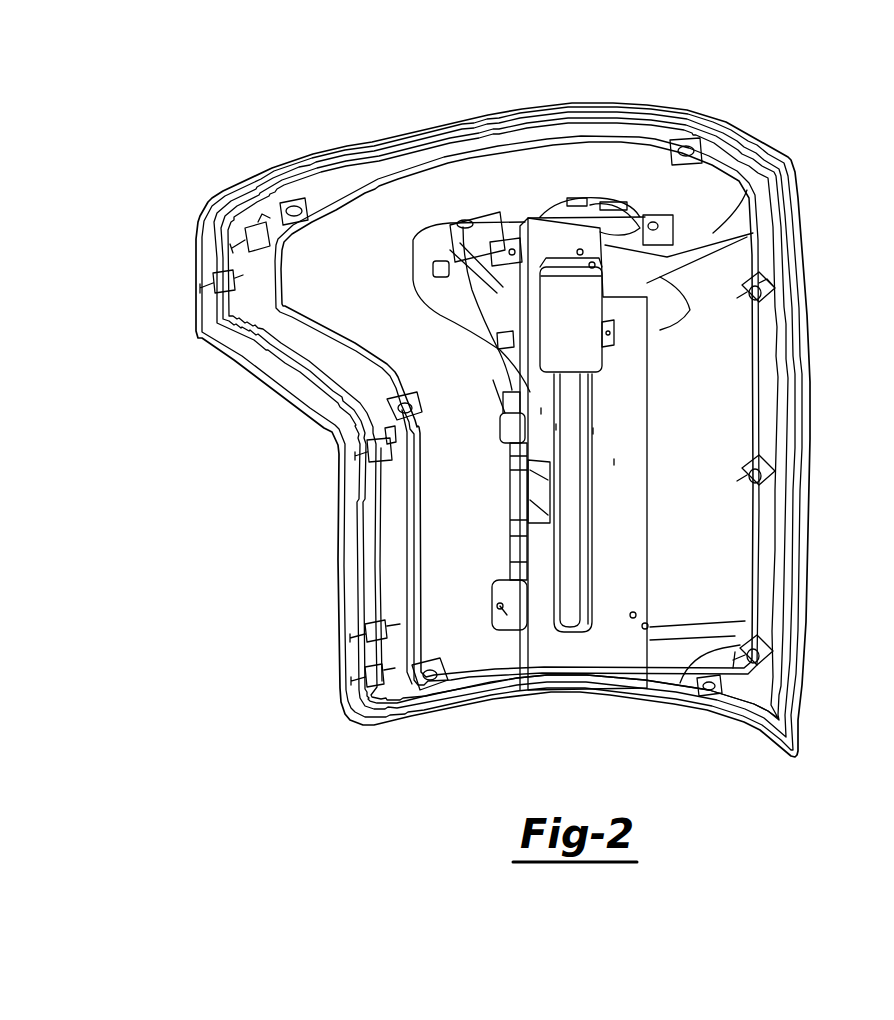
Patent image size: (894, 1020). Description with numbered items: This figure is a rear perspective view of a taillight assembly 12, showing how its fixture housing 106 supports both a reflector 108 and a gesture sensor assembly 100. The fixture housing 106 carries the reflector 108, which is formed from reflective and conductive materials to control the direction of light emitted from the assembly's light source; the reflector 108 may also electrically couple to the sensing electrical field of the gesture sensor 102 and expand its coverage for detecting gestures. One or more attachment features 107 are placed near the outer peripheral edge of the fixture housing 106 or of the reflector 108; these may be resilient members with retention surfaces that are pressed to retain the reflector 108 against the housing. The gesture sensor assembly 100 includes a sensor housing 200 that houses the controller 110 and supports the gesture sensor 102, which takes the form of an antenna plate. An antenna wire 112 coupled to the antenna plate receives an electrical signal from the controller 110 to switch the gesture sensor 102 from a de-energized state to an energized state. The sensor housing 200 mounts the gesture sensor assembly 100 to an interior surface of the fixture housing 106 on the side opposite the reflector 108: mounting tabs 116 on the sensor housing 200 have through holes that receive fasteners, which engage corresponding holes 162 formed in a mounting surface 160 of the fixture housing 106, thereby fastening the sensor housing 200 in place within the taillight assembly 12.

The taillight assembly 12 is at (265, 95).
The gesture sensor assembly 100 is at (548, 237).
The gesture sensor 102 is at (597, 485).
The fixture housing 106 is at (353, 228).
The attachment features 107 is at (367, 457).
The reflector 108 is at (197, 268).
The controller 110 is at (512, 307).
The antenna wire 112 is at (561, 655).
The mounting tabs 116 is at (460, 307).
The holes 162 is at (515, 346).
The mounting surface 160 is at (616, 554).
The sensor housing 200 is at (660, 328).